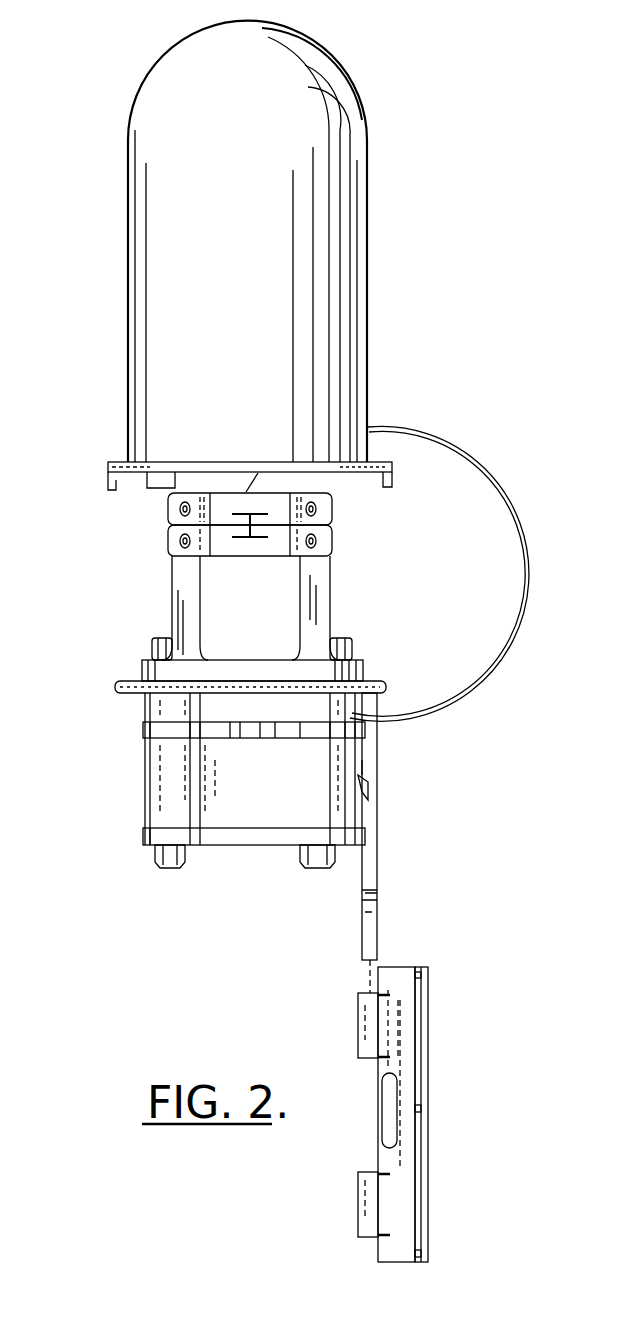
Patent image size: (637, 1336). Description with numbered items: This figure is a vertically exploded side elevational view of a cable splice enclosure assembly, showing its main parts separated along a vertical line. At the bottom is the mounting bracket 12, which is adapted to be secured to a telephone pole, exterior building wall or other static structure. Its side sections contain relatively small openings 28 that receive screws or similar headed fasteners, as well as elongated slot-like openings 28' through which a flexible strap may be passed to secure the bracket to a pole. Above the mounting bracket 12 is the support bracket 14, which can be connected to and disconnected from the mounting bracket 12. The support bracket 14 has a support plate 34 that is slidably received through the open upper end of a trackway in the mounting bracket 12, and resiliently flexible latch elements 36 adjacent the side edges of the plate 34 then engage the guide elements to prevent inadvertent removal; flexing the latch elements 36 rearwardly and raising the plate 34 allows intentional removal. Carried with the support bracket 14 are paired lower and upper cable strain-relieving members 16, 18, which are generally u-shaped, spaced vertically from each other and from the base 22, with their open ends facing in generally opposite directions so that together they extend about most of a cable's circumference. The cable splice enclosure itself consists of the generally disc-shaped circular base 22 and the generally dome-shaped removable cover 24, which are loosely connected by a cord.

The mounting bracket 12 is at (419, 1097).
The support bracket 14 is at (371, 826).
The lower cable strain-relieving member 16 is at (200, 846).
The upper cable strain-relieving member 18 is at (290, 738).
The base 22 is at (152, 670).
The cover 24 is at (152, 210).
The openings 28 is at (458, 1094).
The slot-like openings 28' is at (355, 1110).
The support plate 34 is at (362, 915).
The latch elements 36 is at (366, 797).